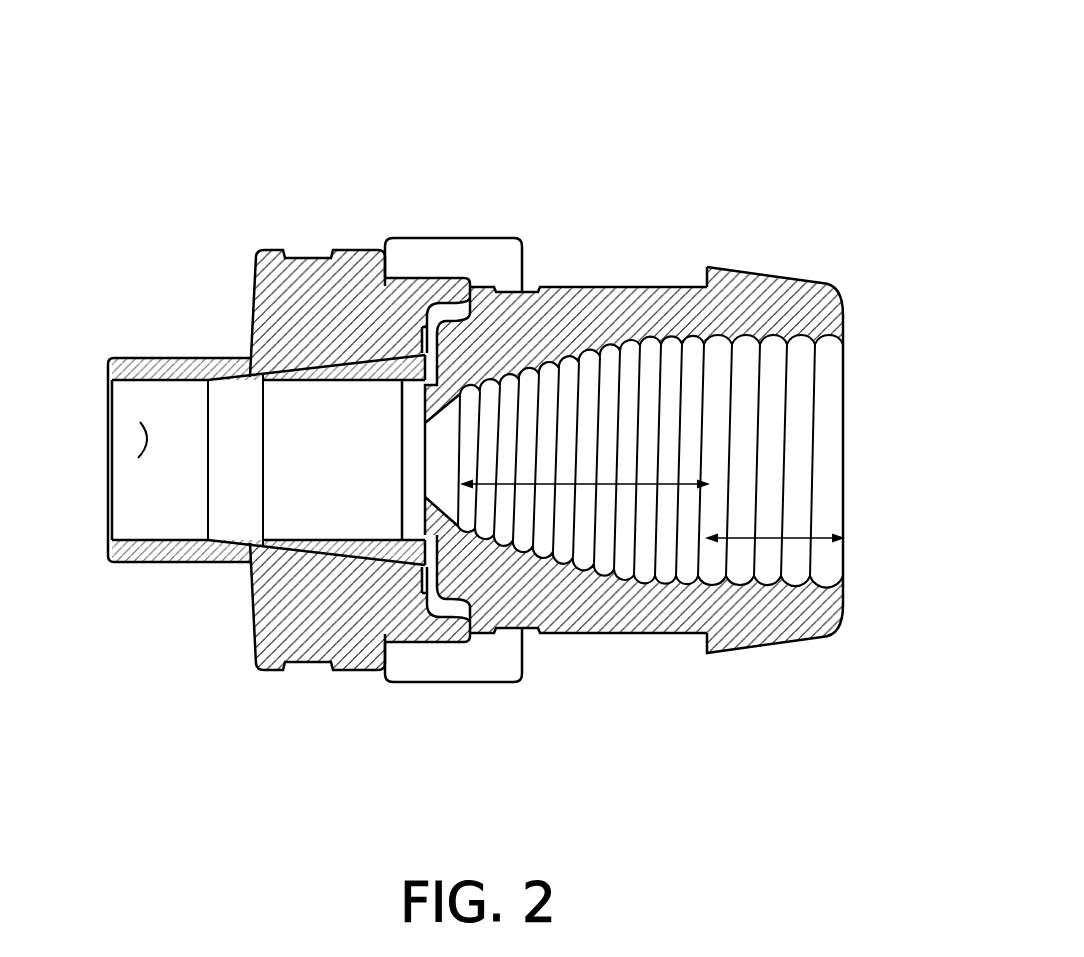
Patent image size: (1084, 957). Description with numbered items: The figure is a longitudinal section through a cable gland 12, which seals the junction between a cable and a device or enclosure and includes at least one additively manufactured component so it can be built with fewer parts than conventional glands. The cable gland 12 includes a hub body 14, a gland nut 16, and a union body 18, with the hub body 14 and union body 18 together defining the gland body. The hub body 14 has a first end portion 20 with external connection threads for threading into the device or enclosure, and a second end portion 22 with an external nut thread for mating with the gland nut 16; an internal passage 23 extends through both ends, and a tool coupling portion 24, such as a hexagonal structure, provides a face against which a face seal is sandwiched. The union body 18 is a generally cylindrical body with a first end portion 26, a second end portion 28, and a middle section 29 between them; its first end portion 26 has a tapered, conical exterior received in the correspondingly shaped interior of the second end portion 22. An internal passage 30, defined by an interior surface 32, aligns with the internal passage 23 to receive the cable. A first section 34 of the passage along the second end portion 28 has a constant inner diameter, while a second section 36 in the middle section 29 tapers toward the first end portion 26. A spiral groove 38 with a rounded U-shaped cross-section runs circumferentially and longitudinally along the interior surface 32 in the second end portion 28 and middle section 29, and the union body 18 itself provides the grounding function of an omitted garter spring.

The cable gland 12 is at (501, 401).
The hub body 14 is at (186, 563).
The gland nut 16 is at (438, 237).
The union body 18 is at (765, 645).
The first end portion 20 is at (113, 362).
The second end portion 22 is at (436, 640).
The internal passage 23 is at (140, 438).
The tool coupling portion 24 is at (300, 262).
The first end portion 26 is at (343, 550).
The second end portion 28 is at (838, 317).
The middle section 29 is at (598, 636).
The internal passage 30 is at (623, 399).
The interior surface 32 is at (814, 430).
The first section 34 is at (805, 538).
The second section 36 is at (650, 488).
The spiral groove 38 is at (752, 373).